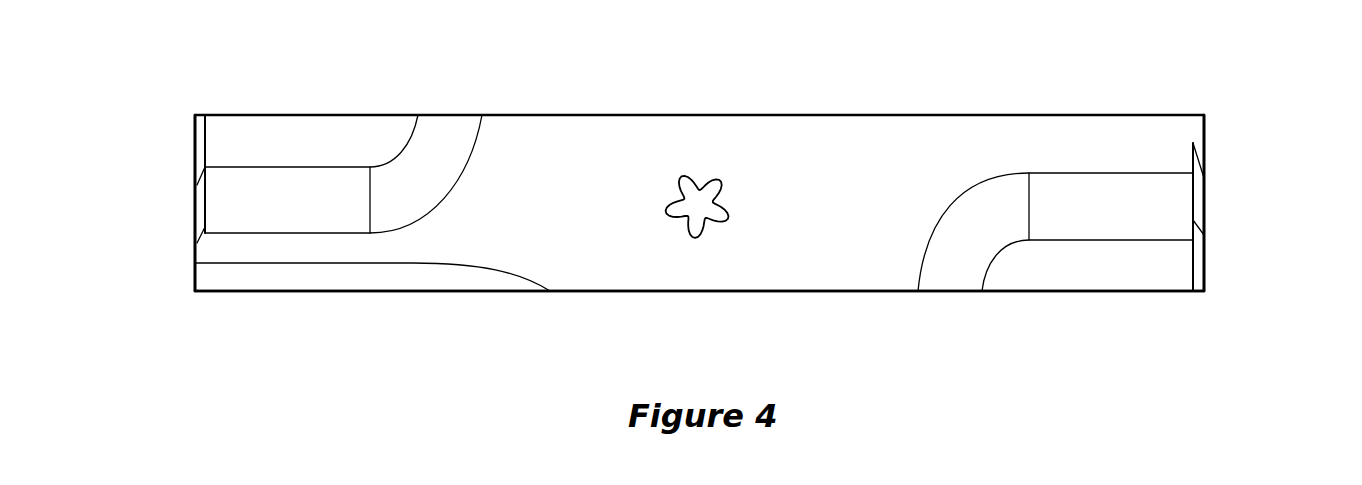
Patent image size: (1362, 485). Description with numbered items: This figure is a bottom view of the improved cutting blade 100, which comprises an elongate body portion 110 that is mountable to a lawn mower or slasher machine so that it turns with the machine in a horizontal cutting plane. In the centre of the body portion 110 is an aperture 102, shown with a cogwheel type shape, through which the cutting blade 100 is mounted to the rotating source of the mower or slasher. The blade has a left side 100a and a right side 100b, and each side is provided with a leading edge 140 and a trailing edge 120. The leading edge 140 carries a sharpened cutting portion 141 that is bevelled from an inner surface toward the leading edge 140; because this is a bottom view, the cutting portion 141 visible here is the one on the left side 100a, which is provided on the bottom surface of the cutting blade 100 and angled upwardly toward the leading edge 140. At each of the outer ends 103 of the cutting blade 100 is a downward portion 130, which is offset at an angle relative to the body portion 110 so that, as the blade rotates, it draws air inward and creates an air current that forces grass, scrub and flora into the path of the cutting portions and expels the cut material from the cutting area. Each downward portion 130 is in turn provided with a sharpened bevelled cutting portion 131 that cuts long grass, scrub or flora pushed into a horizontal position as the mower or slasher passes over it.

The cutting blade 100 is at (637, 303).
The left side 100a is at (530, 232).
The right side 100b is at (894, 222).
The aperture 102 is at (695, 195).
The outer ends 103 is at (195, 276).
The body portion 110 is at (837, 157).
The trailing edge 120 is at (292, 115).
The downward portion 130 is at (203, 148).
The cutting portion 131 is at (197, 245).
The leading edge 140 is at (288, 291).
The cutting portion 141 is at (398, 275).